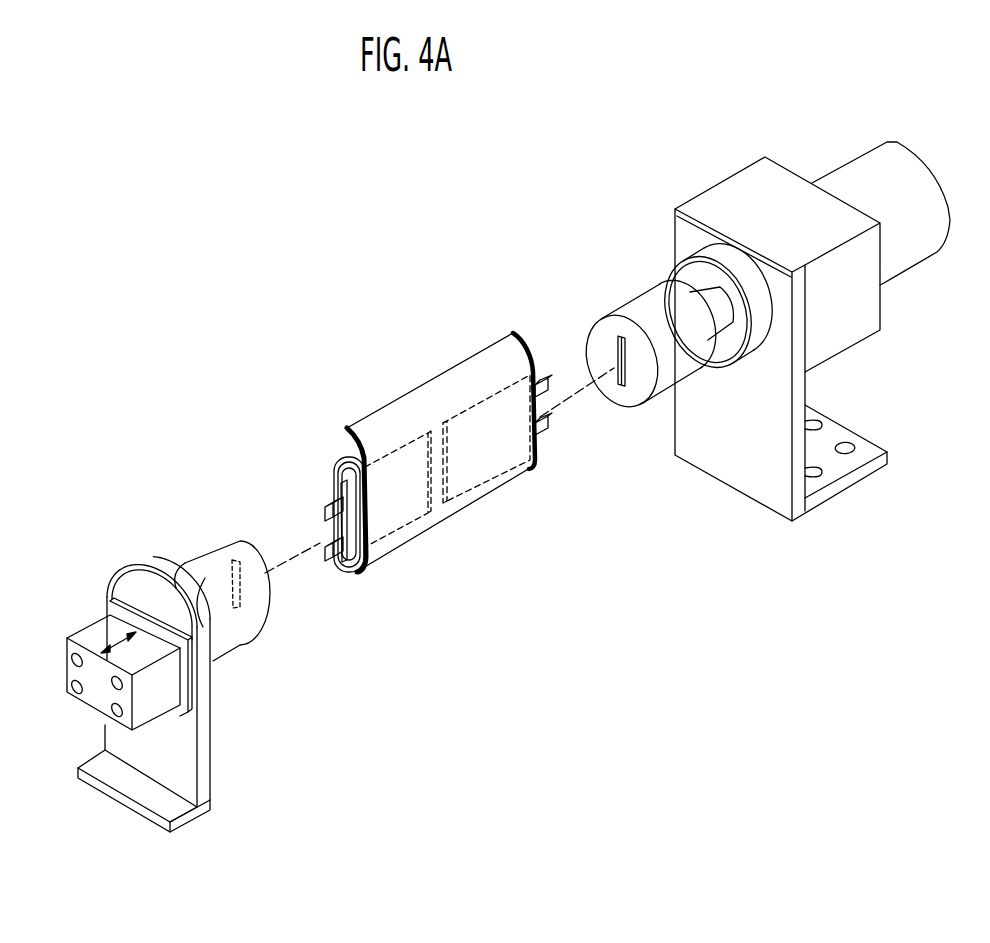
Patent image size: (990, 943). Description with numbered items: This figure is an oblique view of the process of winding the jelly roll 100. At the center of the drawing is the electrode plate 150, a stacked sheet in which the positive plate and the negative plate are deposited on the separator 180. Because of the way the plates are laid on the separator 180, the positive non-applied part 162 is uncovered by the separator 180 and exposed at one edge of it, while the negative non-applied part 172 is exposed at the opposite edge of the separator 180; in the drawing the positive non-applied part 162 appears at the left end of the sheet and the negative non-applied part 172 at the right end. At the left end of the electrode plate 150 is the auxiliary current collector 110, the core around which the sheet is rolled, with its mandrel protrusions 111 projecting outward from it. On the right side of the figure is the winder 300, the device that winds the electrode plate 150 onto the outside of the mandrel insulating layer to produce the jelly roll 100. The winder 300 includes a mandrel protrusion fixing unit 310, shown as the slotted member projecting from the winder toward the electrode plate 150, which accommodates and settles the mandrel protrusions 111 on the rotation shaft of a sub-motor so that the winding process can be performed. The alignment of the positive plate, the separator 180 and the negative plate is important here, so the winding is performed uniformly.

The jelly roll 100 is at (331, 443).
The auxiliary current collector 110 is at (341, 570).
The mandrel protrusions 111 is at (326, 506).
The electrode plate 150 is at (481, 249).
The positive non-applied part 162 is at (345, 432).
The negative non-applied part 172 is at (513, 332).
The separator 180 is at (432, 397).
The winder 300 is at (799, 158).
The mandrel protrusion fixing unit 310 is at (648, 310).